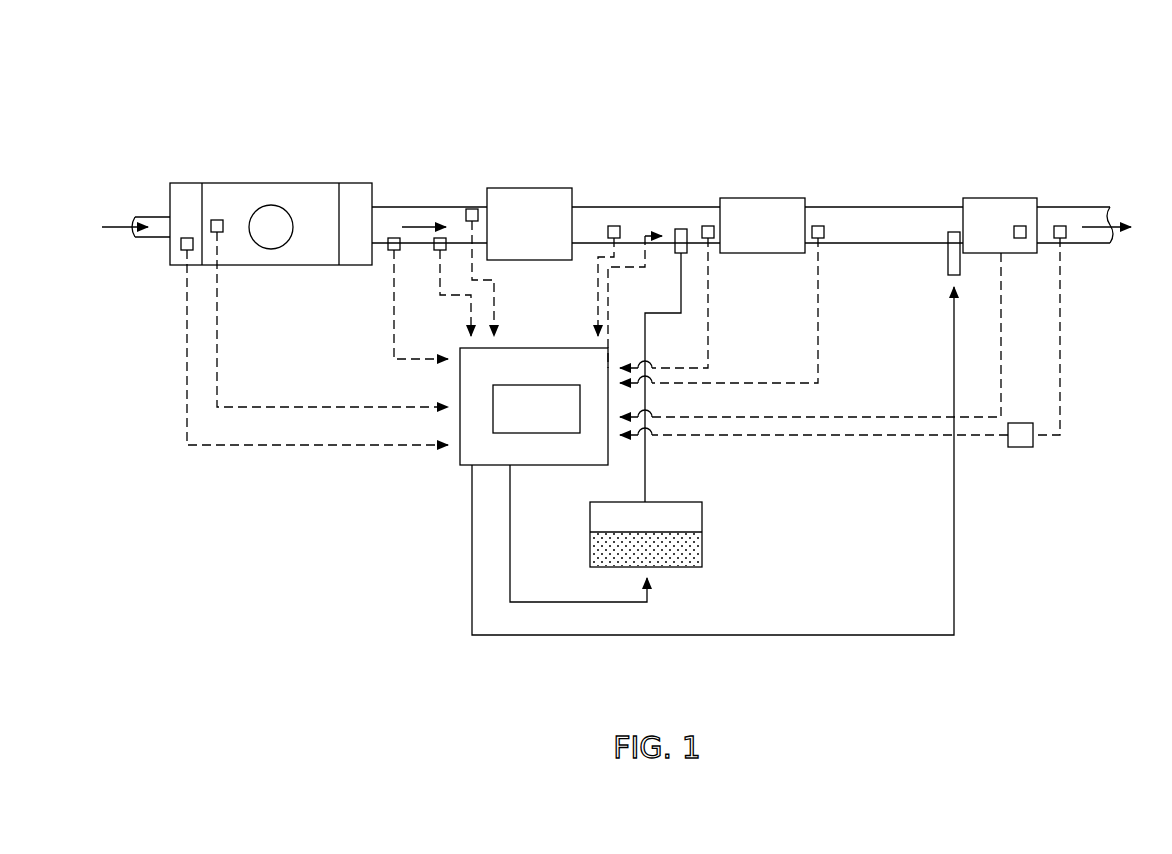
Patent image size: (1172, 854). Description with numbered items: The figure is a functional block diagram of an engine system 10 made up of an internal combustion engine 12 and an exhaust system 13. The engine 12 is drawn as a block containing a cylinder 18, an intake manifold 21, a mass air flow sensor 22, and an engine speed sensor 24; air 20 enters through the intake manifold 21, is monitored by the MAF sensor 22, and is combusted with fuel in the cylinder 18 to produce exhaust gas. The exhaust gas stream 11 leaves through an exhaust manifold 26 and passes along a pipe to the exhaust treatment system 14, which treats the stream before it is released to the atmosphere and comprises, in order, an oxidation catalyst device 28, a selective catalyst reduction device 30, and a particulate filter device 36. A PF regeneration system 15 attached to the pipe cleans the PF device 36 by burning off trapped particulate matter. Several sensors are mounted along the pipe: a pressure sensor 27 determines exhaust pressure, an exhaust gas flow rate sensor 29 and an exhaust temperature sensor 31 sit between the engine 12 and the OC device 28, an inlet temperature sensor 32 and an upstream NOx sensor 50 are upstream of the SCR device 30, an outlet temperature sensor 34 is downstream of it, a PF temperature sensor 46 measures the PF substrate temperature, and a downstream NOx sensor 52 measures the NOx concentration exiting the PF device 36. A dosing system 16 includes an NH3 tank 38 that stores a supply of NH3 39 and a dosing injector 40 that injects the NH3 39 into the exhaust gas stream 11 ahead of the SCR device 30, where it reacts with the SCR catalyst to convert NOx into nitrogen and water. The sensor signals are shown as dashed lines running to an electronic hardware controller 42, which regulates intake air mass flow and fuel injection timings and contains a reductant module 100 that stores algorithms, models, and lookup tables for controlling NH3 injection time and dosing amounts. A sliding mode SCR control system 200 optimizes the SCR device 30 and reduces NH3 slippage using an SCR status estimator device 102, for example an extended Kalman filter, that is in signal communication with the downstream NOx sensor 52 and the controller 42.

The engine system 10 is at (293, 82).
The exhaust gas stream 11 is at (420, 227).
The internal combustion engine 12 is at (251, 195).
The exhaust system 13 is at (445, 128).
The exhaust treatment system 14 is at (828, 107).
The PF regeneration system 15 is at (920, 259).
The dosing system 16 is at (583, 492).
The cylinder 18 is at (271, 205).
The air 20 is at (112, 225).
The intake manifold 21 is at (187, 195).
The mass air flow sensor 22 is at (181, 244).
The engine speed sensor 24 is at (217, 220).
The exhaust manifold 26 is at (352, 185).
The pressure sensor 27 is at (392, 252).
The oxidation catalyst device 28 is at (533, 188).
The exhaust gas flow rate sensor 29 is at (438, 252).
The selective catalyst reduction device 30 is at (762, 198).
The exhaust temperature sensor 31 is at (470, 210).
The inlet temperature sensor 32 is at (706, 226).
The outlet temperature sensor 34 is at (822, 226).
The particulate filter device 36 is at (992, 198).
The NH3 tank 38 is at (702, 515).
The NH3 39 is at (690, 540).
The dosing injector 40 is at (676, 229).
The electronic hardware controller 42 is at (460, 372).
The PF temperature sensor 46 is at (1023, 226).
The upstream NOx sensor 50 is at (617, 226).
The downstream NOx sensor 52 is at (1067, 238).
The reductant module 100 is at (522, 421).
The SCR status estimator device 102 is at (1021, 422).
The sliding mode SCR control system 200 is at (1030, 578).